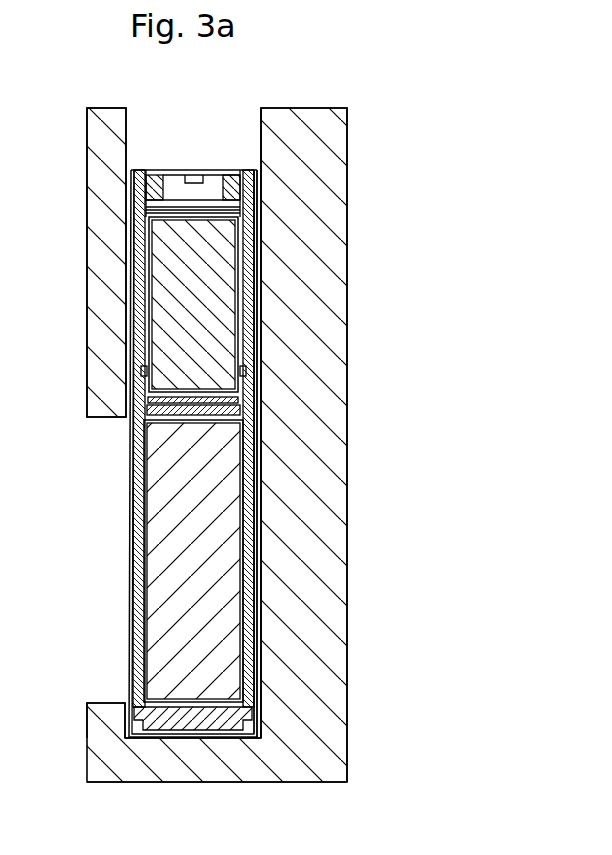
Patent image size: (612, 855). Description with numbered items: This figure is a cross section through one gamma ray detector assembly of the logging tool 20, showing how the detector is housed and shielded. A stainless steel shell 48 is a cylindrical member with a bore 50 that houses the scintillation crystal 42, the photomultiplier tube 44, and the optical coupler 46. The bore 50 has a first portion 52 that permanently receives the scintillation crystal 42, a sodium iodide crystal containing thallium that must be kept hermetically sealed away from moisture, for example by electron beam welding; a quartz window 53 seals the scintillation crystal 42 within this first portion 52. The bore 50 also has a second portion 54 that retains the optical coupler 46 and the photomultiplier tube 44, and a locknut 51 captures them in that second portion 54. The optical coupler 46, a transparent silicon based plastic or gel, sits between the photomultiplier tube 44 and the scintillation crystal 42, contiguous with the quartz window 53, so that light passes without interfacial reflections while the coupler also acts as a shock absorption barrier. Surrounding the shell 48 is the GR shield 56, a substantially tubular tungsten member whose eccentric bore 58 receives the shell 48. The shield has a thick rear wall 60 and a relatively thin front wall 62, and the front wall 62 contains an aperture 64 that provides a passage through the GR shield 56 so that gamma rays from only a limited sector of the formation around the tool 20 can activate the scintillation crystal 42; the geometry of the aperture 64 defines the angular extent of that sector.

The tool 20 is at (347, 106).
The scintillation crystal 42 is at (170, 632).
The photomultiplier tube 44 is at (167, 292).
The optical coupler 46 is at (148, 401).
The shell 48 is at (128, 513).
The bore 50 is at (139, 580).
The locknut 51 is at (235, 176).
The first portion 52 is at (248, 643).
The quartz window 53 is at (248, 412).
The second portion 54 is at (248, 252).
The GR shield 56 is at (220, 770).
The eccentric bore 58 is at (262, 538).
The rear wall 60 is at (315, 310).
The front wall 62 is at (112, 343).
The aperture 64 is at (110, 701).